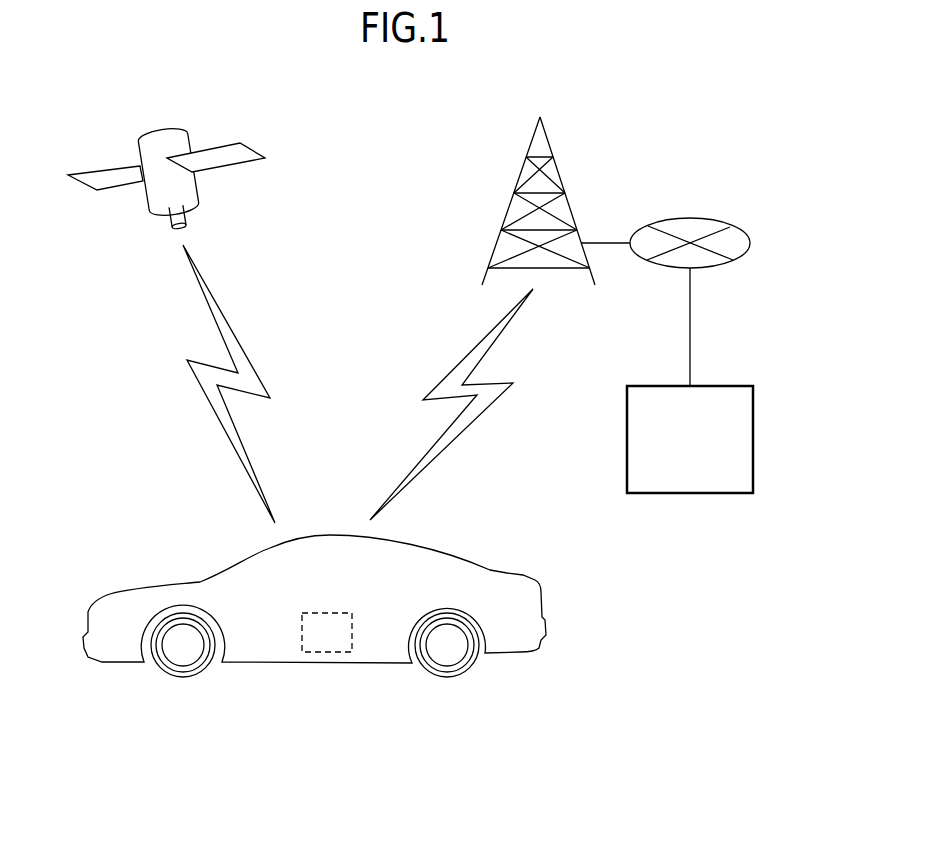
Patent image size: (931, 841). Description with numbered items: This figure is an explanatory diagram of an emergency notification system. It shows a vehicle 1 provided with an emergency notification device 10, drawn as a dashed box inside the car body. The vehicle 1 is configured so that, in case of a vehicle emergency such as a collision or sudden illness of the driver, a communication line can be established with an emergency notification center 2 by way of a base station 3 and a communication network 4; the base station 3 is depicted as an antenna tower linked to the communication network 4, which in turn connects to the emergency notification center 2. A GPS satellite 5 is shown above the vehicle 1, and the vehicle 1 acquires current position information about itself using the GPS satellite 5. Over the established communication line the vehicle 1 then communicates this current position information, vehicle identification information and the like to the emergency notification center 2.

The vehicle 1 is at (520, 602).
The emergency notification center 2 is at (753, 407).
The base station 3 is at (550, 140).
The communication network 4 is at (715, 217).
The GPS satellite 5 is at (170, 136).
The emergency notification device 10 is at (325, 633).